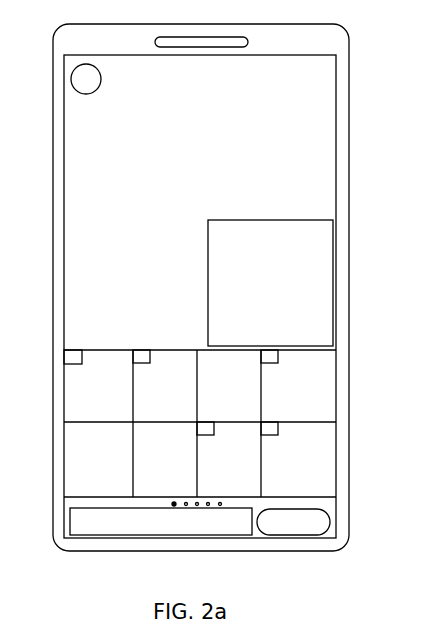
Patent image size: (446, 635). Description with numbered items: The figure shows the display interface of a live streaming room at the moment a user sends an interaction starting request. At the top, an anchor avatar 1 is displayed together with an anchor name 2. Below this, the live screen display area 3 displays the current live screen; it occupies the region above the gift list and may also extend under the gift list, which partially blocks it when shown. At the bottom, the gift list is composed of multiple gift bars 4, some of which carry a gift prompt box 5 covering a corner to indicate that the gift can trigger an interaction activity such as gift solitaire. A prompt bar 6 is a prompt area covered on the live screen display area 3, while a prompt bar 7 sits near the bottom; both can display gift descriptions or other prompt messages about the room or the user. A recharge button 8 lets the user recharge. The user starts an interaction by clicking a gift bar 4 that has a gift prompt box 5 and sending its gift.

The anchor avatar 1 is at (70, 78).
The anchor name 2 is at (138, 79).
The live screen display area 3 is at (290, 139).
The gift bar 4 is at (410, 347).
The gift prompt box 5 is at (31, 331).
The prompt bar 6 is at (270, 283).
The prompt bar 7 is at (161, 521).
The recharge button 8 is at (293, 522).